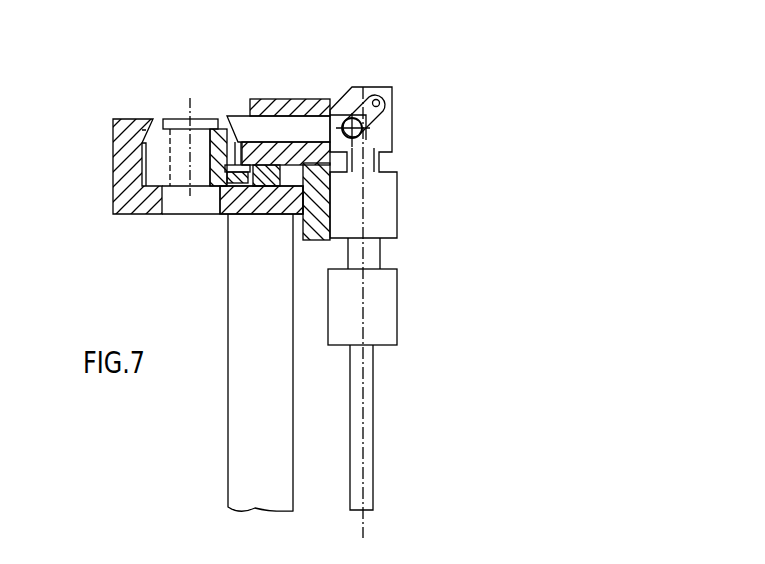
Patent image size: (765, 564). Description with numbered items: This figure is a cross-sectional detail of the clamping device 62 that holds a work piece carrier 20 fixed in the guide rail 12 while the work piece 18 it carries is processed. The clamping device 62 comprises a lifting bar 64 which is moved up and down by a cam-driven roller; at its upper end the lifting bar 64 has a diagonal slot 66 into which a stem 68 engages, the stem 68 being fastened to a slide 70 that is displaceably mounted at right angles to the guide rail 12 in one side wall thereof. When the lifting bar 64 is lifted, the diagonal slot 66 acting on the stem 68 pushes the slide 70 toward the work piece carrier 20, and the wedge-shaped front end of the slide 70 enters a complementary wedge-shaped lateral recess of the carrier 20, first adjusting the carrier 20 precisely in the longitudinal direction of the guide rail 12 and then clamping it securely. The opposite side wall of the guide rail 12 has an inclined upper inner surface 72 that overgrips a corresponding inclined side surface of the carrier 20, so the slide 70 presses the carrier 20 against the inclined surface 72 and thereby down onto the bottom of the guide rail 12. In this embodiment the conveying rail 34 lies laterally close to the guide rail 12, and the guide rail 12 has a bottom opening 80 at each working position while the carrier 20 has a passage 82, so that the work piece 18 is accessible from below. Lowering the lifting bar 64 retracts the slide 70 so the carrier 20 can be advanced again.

The guide rail 12 is at (120, 118).
The work piece 18 is at (203, 118).
The work piece carrier 20 is at (157, 173).
The conveying rail 34 is at (260, 183).
The clamping device 62 is at (398, 143).
The lifting bar 64 is at (367, 480).
The diagonal slot 66 is at (377, 99).
The stem 68 is at (350, 119).
The slide 70 is at (275, 125).
The inclined upper inner surface 72 is at (147, 118).
The bottom opening 80 is at (162, 200).
The passage 82 is at (167, 159).